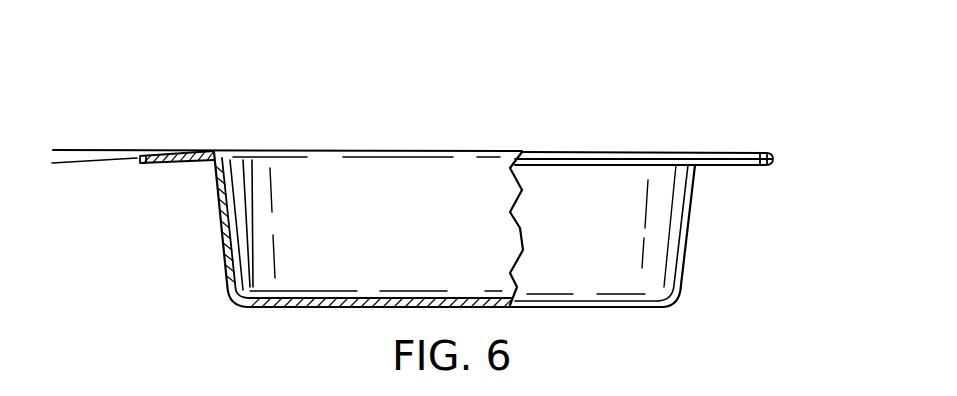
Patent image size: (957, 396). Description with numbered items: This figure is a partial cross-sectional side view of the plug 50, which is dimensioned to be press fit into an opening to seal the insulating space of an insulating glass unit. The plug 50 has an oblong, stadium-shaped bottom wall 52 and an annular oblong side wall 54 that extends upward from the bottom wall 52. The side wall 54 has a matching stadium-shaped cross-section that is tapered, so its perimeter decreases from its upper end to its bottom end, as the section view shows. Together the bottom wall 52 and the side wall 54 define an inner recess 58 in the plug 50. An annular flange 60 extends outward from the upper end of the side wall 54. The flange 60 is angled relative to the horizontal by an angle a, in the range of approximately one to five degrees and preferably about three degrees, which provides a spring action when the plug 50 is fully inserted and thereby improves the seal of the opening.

The plug 50 is at (611, 121).
The bottom wall 52 is at (373, 302).
The side wall 54 is at (231, 202).
The inner recess 58 is at (402, 197).
The flange 60 is at (182, 152).
The angle α a is at (90, 202).